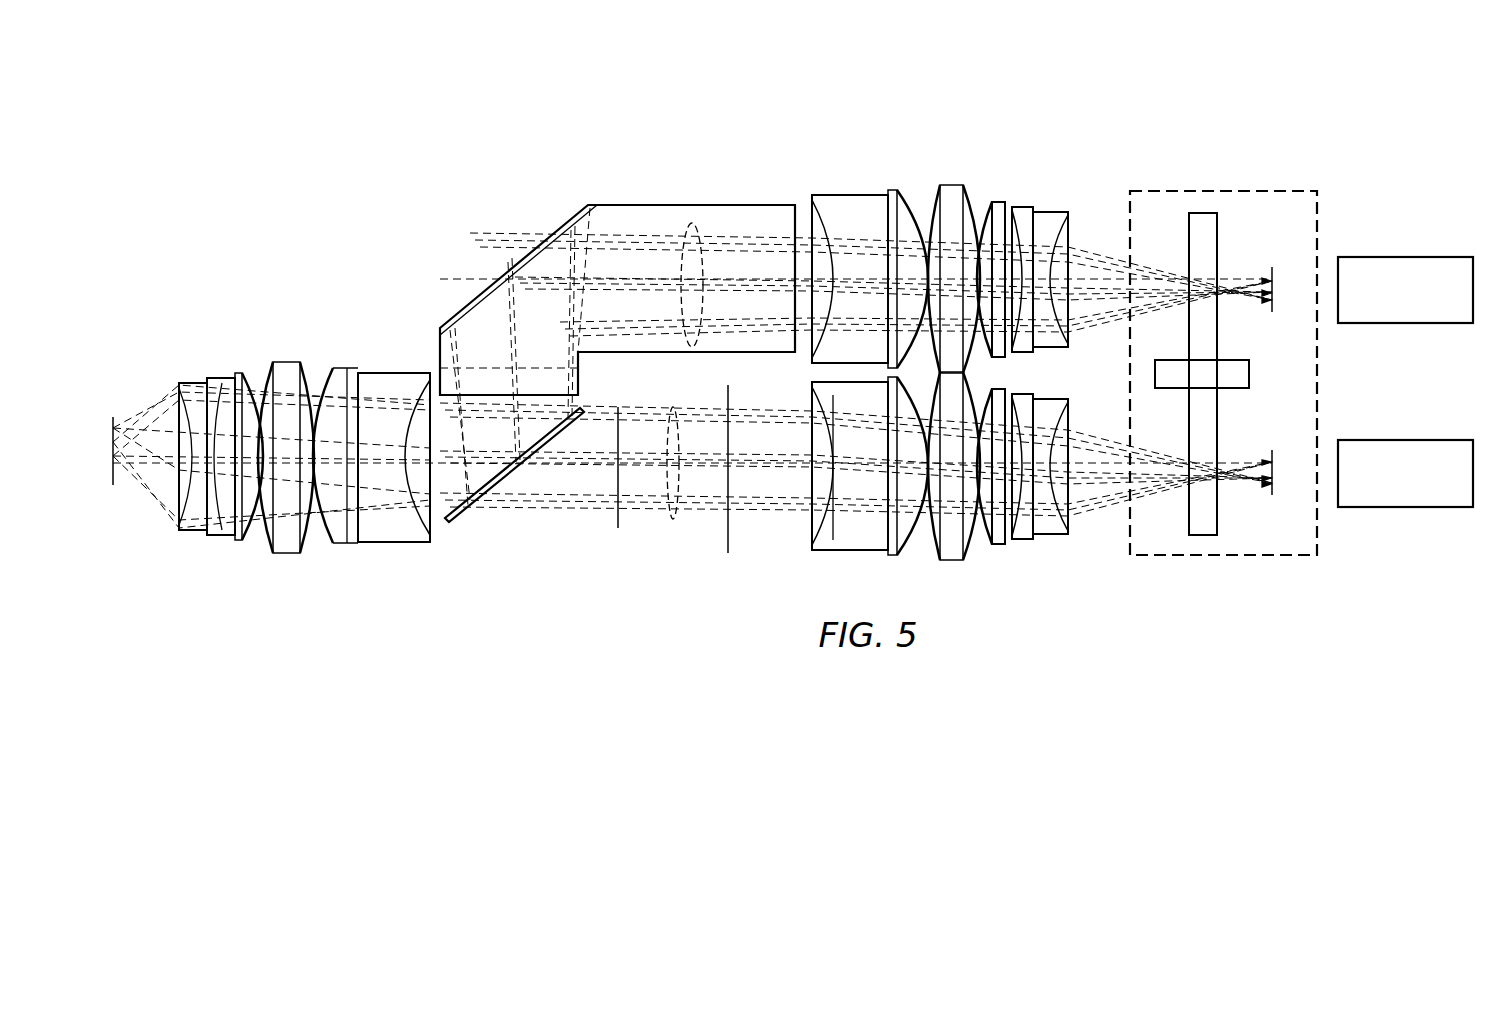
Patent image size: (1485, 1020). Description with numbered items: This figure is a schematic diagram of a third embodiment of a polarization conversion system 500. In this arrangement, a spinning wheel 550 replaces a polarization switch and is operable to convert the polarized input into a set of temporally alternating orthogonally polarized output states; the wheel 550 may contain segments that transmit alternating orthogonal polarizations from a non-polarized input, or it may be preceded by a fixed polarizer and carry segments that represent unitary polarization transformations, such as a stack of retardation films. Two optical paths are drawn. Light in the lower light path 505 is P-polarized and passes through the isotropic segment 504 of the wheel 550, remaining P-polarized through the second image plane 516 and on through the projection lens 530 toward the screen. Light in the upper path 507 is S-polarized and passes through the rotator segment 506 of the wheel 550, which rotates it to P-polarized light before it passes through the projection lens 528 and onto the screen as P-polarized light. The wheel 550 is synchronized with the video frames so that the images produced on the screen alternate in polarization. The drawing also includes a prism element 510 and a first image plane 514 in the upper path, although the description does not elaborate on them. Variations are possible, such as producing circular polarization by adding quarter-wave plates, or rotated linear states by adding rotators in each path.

The polarization conversion system 500 is at (398, 150).
The isotropic segment 504 is at (1203, 535).
The lower light path 505 is at (673, 520).
The rotator segment 506 is at (1203, 213).
The upper path 507 is at (692, 222).
The prism 510 is at (532, 250).
The image plane 1 514 is at (1275, 312).
The Image 2 516 is at (1270, 450).
The projection lens 528 is at (1405, 190).
The projection lens 530 is at (1405, 509).
The spinning wheel 550 is at (1243, 558).